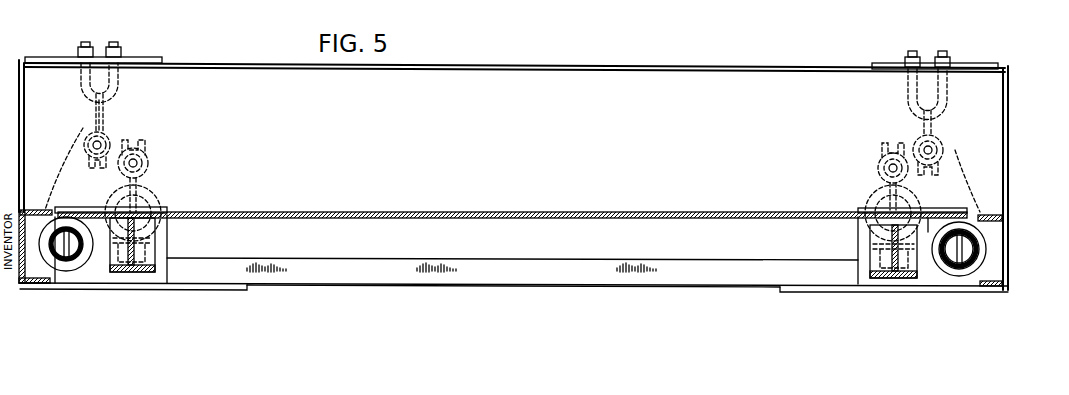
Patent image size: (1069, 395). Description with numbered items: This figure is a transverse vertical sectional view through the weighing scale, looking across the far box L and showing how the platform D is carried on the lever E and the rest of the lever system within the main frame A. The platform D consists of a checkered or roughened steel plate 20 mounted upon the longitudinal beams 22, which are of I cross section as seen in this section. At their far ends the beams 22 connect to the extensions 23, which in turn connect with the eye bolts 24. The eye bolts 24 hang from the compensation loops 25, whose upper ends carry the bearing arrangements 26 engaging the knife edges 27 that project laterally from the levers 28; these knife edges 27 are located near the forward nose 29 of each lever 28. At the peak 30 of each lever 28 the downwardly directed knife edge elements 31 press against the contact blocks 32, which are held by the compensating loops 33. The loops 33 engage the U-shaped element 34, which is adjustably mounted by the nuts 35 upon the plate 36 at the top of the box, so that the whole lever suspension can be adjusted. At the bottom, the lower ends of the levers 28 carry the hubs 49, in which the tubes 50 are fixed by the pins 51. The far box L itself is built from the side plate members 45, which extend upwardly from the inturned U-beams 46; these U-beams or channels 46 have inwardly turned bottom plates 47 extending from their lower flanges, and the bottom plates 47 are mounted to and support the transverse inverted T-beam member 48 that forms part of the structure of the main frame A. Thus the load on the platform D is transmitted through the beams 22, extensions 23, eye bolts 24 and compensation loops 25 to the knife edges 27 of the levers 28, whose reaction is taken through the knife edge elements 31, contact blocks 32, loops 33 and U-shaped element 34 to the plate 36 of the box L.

The checkered steel plate 20 is at (460, 213).
The longitudinal beams 22 is at (158, 255).
The extensions 23 is at (117, 243).
The eye bolts 24 is at (150, 196).
The compensation loops 25 is at (112, 190).
The bearing arrangements 26 is at (118, 134).
The knife edges 27 is at (148, 166).
The levers 28 is at (77, 161).
The forward nose 29 is at (150, 135).
The peak 30 is at (118, 120).
The knife edge elements 31 is at (85, 130).
The contact blocks 32 is at (97, 168).
The compensating loops 33 is at (113, 108).
The U-shaped element 34 is at (80, 81).
The nuts 35 is at (116, 46).
The plate 36 is at (32, 57).
The side plate members 45 is at (2, 175).
The U-beams 46 is at (26, 286).
The bottom plates 47 is at (183, 289).
The inverted T-beam member 48 is at (585, 285).
The hubs 49 is at (44, 233).
The tubes 50 is at (64, 254).
The pins 51 is at (70, 252).
The far box L is at (598, 64).
The platform D is at (616, 212).
The lever E is at (0, 113).
The main frame A is at (1013, 220).